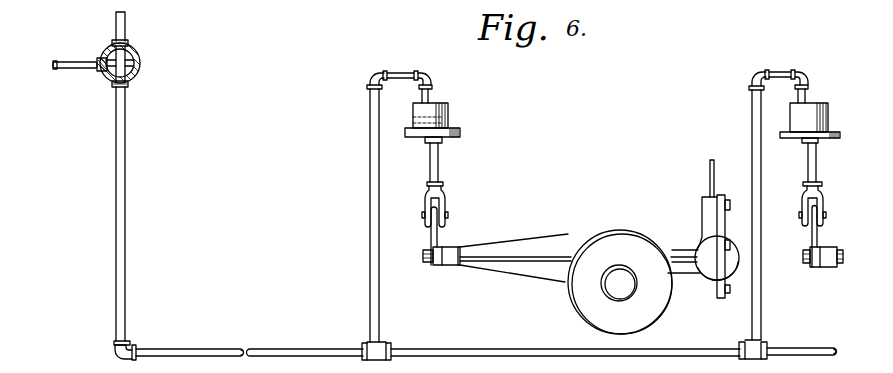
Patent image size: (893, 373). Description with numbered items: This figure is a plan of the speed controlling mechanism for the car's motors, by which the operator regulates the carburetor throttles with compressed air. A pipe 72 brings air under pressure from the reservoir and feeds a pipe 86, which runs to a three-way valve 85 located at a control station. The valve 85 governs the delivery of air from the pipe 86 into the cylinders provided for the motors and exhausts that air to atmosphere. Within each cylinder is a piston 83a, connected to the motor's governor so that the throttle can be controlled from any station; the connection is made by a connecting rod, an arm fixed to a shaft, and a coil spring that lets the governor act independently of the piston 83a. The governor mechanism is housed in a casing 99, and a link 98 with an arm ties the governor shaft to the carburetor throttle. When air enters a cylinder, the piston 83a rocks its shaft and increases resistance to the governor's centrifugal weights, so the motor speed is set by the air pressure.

The pipe 72 is at (197, 352).
The piston 83a is at (412, 109).
The valve 85 is at (139, 51).
The pipe 86 is at (126, 207).
The link 98 is at (709, 163).
The casing 99 is at (583, 293).